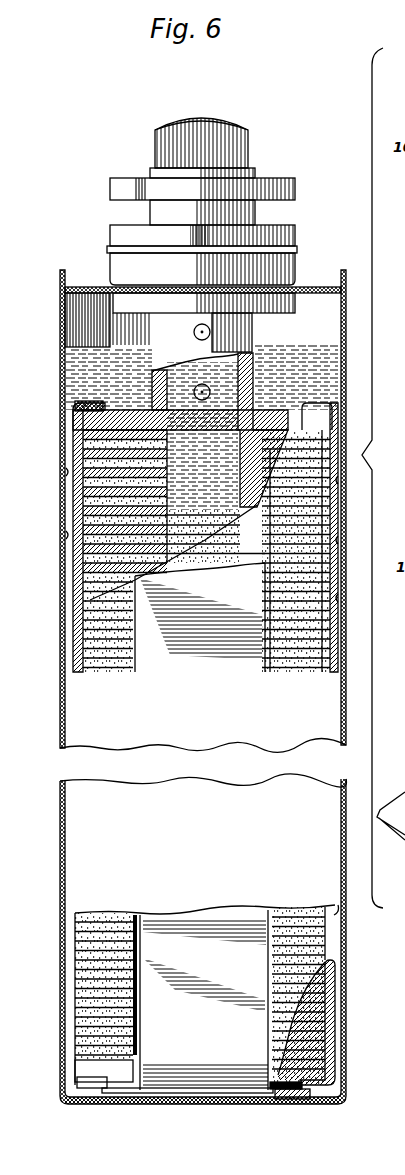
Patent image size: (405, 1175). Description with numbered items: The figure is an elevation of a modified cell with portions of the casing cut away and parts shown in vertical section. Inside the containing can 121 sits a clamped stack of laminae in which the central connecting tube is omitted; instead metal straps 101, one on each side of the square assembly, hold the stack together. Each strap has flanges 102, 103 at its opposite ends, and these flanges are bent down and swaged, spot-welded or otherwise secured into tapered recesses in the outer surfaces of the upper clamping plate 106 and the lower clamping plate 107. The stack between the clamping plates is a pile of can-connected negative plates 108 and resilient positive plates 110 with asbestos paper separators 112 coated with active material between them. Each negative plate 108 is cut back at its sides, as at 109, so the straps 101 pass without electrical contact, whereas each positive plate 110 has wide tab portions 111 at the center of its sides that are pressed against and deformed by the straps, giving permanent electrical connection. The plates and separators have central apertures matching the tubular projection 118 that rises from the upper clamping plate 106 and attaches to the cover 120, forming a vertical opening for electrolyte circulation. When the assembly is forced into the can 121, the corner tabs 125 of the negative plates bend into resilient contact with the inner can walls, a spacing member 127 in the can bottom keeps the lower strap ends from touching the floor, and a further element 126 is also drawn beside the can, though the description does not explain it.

The metal strap 101 is at (75, 466).
The flange 102 is at (88, 403).
The flange 103 is at (95, 1093).
The upper clamping plate 106 is at (88, 429).
The lower clamping plate 107 is at (90, 1063).
The negative plate 108 is at (100, 660).
The cut-back portion 109 is at (75, 547).
The positive plate 110 is at (100, 513).
The tab portion 111 is at (95, 577).
The asbestos paper separator 112 is at (85, 612).
The tubular projection 118 is at (160, 330).
The cover 120 is at (86, 286).
The containing can 121 is at (63, 309).
The corner tab 125 is at (70, 478).
The lead wire 126 is at (396, 841).
The spacing member 127 is at (143, 1095).